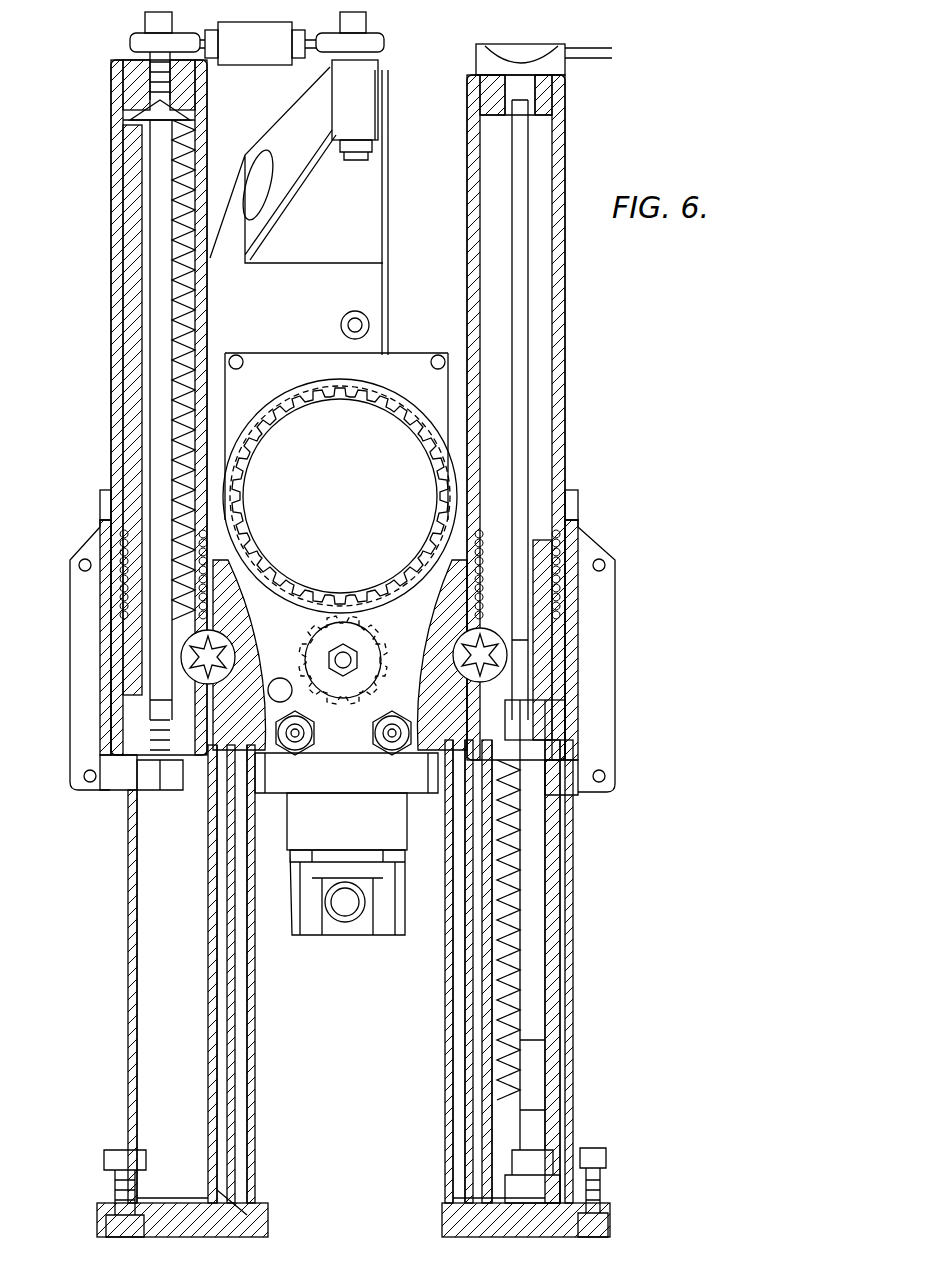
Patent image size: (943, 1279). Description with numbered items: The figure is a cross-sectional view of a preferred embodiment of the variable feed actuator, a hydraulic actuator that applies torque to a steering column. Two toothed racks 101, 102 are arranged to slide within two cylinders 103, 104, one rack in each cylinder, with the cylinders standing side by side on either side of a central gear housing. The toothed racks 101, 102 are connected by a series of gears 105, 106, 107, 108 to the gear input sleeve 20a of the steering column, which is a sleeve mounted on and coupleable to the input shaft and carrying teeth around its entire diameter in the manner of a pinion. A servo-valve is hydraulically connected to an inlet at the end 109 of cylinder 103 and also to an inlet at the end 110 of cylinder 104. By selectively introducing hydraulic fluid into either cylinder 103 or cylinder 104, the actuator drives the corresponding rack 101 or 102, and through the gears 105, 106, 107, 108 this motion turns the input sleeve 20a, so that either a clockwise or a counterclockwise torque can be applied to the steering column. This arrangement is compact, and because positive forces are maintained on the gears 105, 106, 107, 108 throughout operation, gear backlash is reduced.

The gear input sleeve 20a is at (335, 512).
The toothed rack 101 is at (132, 284).
The toothed rack 102 is at (548, 670).
The cylinder 103 is at (118, 246).
The cylinder 104 is at (568, 280).
The gear 105 is at (490, 676).
The gear 106 is at (372, 700).
The gear 107 is at (378, 698).
The gear 108 is at (182, 656).
The end of cylinder 109 is at (148, 1110).
The end of cylinder 110 is at (550, 178).